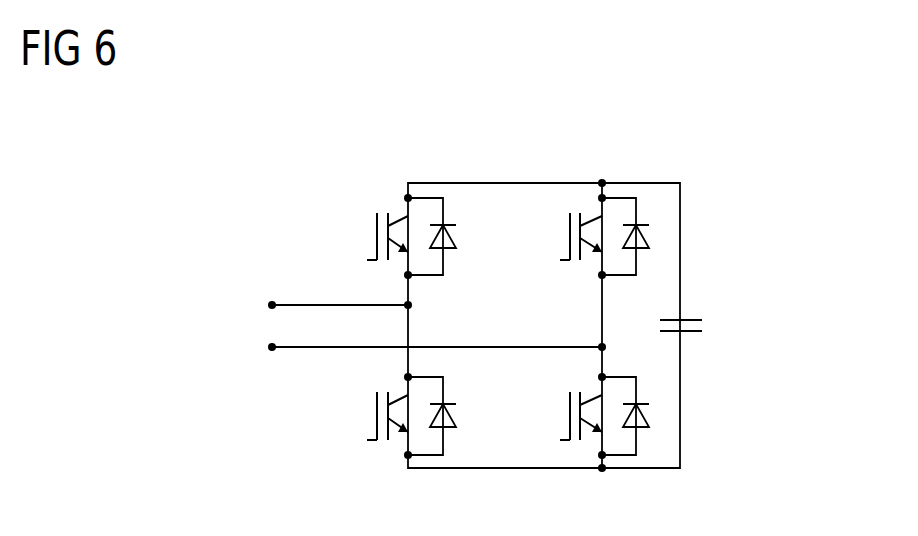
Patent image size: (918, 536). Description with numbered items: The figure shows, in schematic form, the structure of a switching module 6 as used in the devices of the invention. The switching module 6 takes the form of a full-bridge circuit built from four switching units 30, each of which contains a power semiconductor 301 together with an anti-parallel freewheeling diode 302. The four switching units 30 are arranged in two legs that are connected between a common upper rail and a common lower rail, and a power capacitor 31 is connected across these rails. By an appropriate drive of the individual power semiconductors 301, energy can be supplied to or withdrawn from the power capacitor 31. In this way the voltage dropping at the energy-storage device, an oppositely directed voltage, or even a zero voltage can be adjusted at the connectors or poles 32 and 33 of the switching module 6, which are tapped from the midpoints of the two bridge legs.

The switching module 6 is at (809, 207).
The switching module (IGBT with freewheeling diode) 30 is at (514, 322).
The power semiconductor 301 is at (439, 326).
The freewheeling diode 302 is at (591, 311).
The power capacitor 31 is at (702, 323).
The connector or pole 32 is at (272, 305).
The connector or pole 33 is at (272, 347).